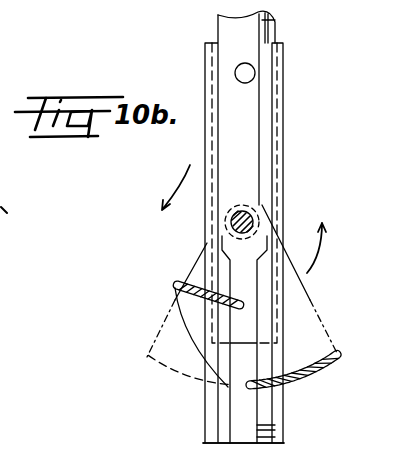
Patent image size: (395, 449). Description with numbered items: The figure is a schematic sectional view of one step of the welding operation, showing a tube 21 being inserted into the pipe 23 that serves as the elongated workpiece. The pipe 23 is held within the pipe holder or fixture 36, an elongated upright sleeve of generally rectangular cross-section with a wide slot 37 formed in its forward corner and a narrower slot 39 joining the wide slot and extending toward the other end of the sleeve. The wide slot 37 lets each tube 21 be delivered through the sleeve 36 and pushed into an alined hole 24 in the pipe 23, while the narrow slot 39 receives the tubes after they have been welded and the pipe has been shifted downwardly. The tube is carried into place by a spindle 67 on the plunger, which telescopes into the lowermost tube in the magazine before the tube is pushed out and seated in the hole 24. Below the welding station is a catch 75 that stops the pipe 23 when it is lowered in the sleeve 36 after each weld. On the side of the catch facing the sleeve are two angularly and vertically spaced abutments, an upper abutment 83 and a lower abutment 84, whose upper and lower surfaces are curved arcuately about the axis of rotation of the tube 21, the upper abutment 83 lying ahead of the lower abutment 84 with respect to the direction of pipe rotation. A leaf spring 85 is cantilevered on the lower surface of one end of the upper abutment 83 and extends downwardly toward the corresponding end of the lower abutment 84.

The projecting rod-like member 21 is at (253, 213).
The elongated workpiece 23 is at (266, 38).
The hole 24 is at (253, 82).
The pipe holder or fixture 36 is at (284, 153).
The wide slot 37 is at (205, 152).
The narrow slot 39 is at (222, 428).
The spindle 67 is at (228, 235).
The catch 75 is at (323, 301).
The upper abutment 83 is at (180, 300).
The lower abutment 84 is at (312, 376).
The leaf spring 85 is at (197, 335).